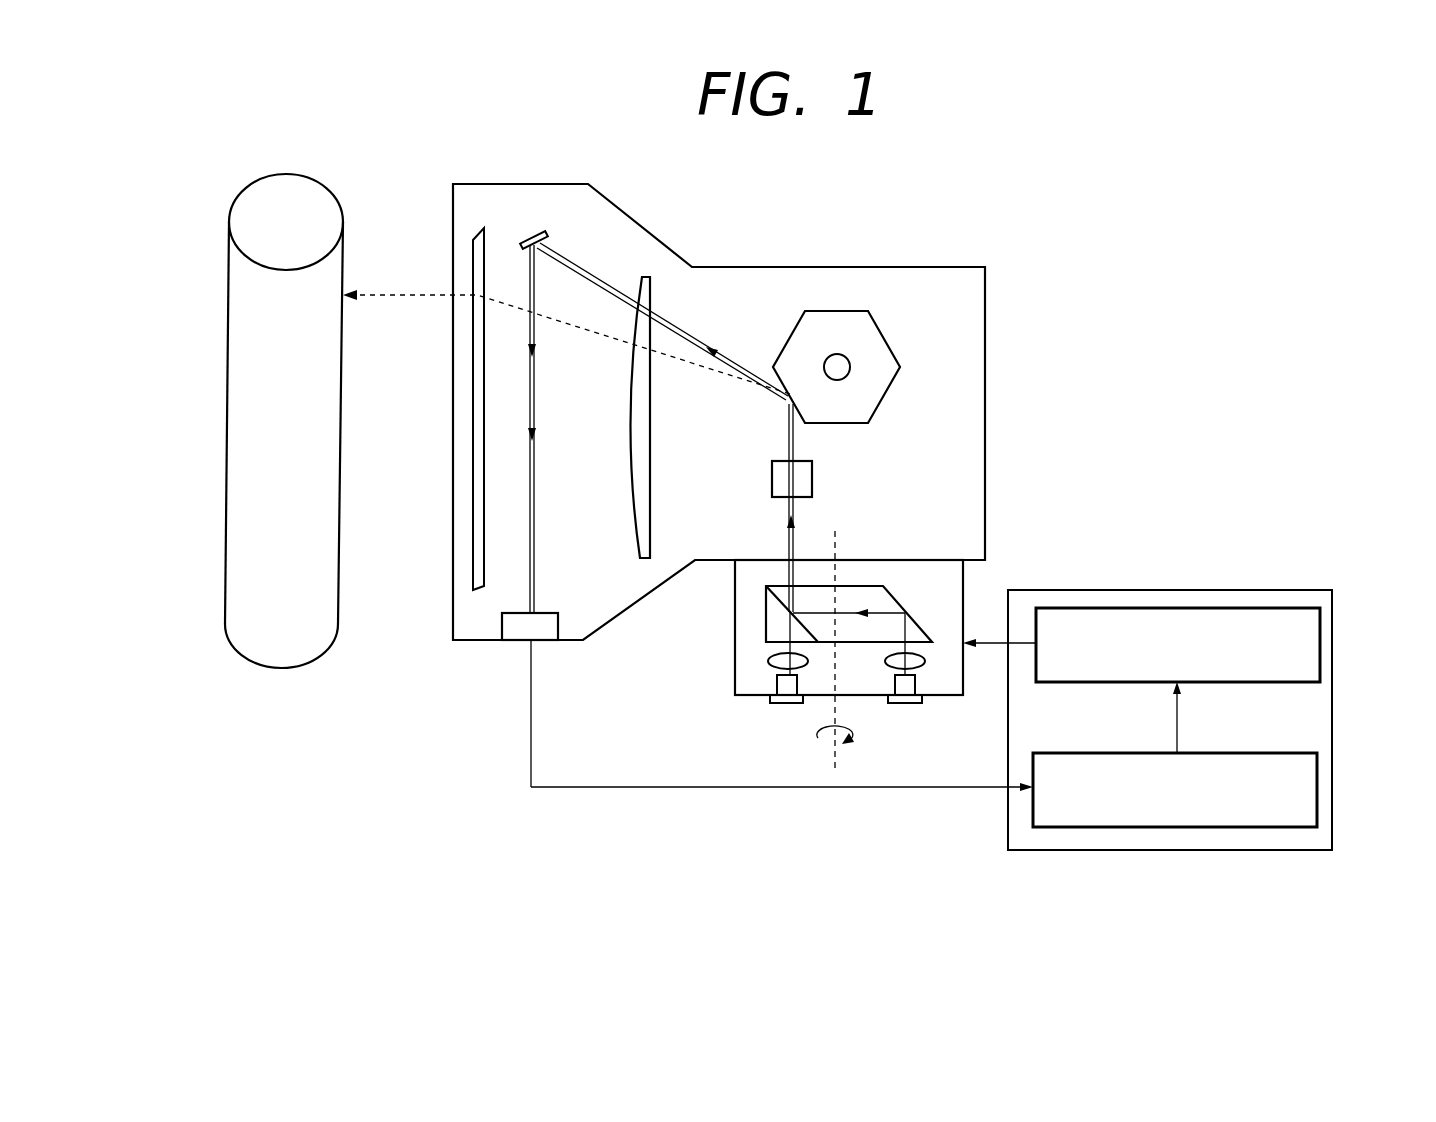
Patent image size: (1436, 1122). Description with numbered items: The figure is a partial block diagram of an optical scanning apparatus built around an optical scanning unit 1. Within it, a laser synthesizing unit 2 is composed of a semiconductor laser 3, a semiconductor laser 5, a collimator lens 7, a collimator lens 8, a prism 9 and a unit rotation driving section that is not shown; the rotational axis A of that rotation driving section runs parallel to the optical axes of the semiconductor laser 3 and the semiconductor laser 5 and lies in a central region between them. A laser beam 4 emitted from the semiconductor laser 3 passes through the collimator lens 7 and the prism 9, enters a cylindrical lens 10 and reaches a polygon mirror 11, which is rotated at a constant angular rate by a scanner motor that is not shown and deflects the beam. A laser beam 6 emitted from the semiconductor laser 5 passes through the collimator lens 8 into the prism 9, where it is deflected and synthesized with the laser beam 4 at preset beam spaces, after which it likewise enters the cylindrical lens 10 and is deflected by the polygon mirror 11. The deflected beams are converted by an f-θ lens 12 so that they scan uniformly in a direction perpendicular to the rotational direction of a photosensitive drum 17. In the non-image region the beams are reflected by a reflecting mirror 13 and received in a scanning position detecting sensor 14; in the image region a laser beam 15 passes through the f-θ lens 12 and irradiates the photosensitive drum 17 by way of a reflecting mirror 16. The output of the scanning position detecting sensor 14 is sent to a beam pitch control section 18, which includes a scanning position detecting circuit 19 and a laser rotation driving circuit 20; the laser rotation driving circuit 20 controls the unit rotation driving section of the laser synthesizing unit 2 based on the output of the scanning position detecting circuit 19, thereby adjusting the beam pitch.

The optical scanning unit 1 is at (880, 268).
The laser synthesizing unit 2 is at (738, 680).
The semiconductor laser 3 is at (780, 704).
The laser beam 4 is at (732, 362).
The semiconductor laser 5 is at (912, 704).
The laser beam 6 is at (716, 372).
The collimator lens 7 is at (770, 660).
The collimator lens 8 is at (925, 660).
The prism 9 is at (857, 586).
The cylindrical lens 10 is at (773, 482).
The polygon mirror 11 is at (880, 393).
The f-θ lens 12 is at (627, 442).
The reflecting mirror 13 is at (530, 236).
The scanning position detecting sensor 14 is at (548, 618).
The laser beam 15 is at (385, 294).
The reflecting mirror 16 is at (478, 384).
The photosensitive drum 17 is at (288, 655).
The beam pitch control section 18 is at (1240, 590).
The scanning position detecting circuit 19 is at (1255, 827).
The laser rotation driving circuit 20 is at (1258, 682).
The rotational axis A is at (838, 752).